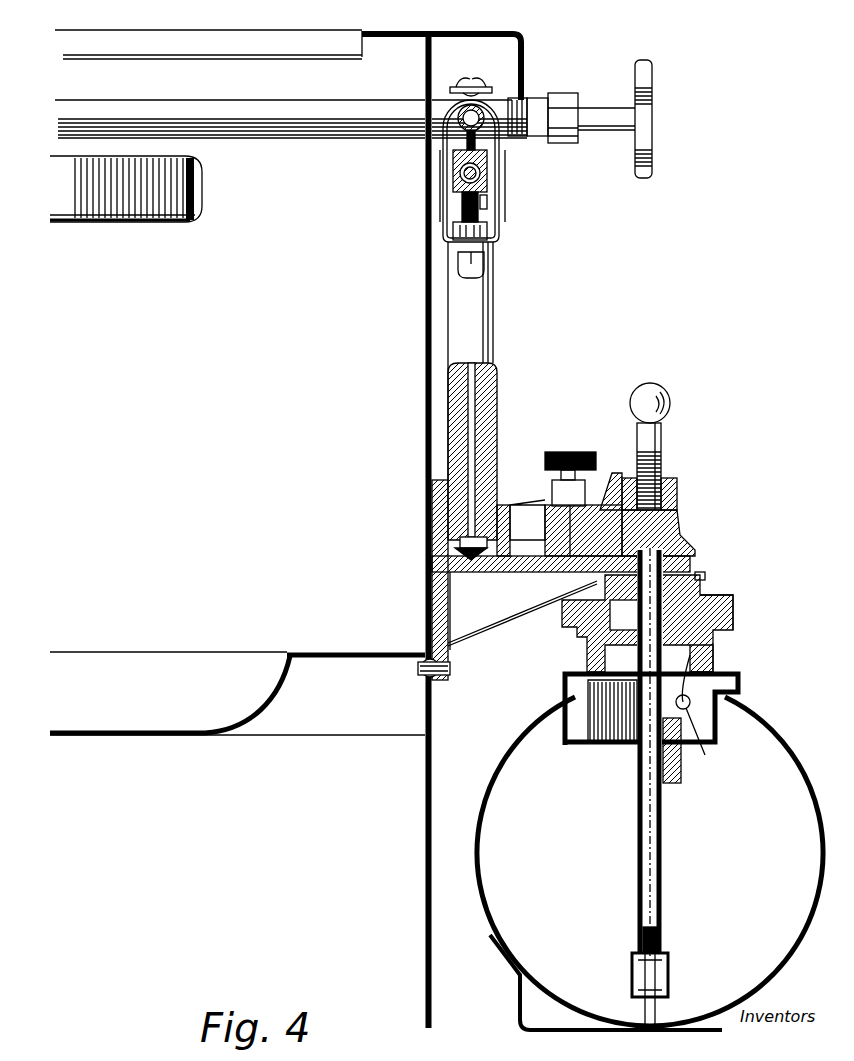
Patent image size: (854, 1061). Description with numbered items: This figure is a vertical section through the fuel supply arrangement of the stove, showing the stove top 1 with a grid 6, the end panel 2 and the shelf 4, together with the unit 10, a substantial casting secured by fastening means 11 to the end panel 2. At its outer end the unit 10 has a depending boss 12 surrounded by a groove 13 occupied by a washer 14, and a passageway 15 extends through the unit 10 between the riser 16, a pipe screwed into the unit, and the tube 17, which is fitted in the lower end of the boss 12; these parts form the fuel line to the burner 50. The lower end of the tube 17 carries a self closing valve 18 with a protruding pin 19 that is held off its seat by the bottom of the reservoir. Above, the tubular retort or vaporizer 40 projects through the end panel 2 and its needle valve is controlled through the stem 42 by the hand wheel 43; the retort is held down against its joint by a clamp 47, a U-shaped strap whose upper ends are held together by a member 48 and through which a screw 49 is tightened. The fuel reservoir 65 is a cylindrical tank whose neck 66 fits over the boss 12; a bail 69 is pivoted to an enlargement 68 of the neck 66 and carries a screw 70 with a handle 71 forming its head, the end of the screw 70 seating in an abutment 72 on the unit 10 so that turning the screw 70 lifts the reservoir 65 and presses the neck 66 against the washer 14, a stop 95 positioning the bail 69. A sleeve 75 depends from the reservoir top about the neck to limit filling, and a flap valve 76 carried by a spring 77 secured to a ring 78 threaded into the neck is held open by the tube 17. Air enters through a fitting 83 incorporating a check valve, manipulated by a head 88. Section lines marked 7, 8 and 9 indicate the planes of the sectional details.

The top 1 is at (429, 32).
The end panel 2 is at (425, 352).
The shelf 4 is at (210, 660).
The grid 6 is at (650, 385).
The section line 7- 7 is at (378, 542).
The section line 8- 8 is at (458, 66).
The section line 9- 9 is at (570, 445).
The unit 10 is at (487, 603).
The fastening means 11 is at (452, 672).
The depending boss 12 is at (690, 617).
The groove 13 is at (704, 574).
The washer 14 is at (706, 577).
The passageway 15 is at (536, 572).
The riser 16 is at (487, 408).
The tube 17 is at (638, 771).
The self closing valve 18 is at (633, 985).
The protruding pin 19 is at (656, 1010).
The retort or vaporizer 40 is at (330, 128).
The stem 42 is at (603, 115).
The hand wheel 43 is at (648, 122).
The clamp 47 is at (505, 150).
The member 48 is at (450, 90).
The screw 49 is at (488, 206).
The burner 50 is at (184, 224).
The fuel reservoir 65 is at (780, 732).
The neck 66 is at (714, 650).
The enlargement 68 is at (733, 606).
The bail 69 is at (677, 489).
The screw 70 is at (662, 447).
The handle 71 is at (668, 397).
The abutment 72 is at (681, 520).
The sleeve 75 is at (590, 700).
The flap valve 76 is at (681, 775).
The spring 77 is at (706, 748).
The ring 78 is at (612, 711).
The fitting 83 is at (553, 490).
The head 88 is at (557, 452).
The stop 95 is at (610, 473).